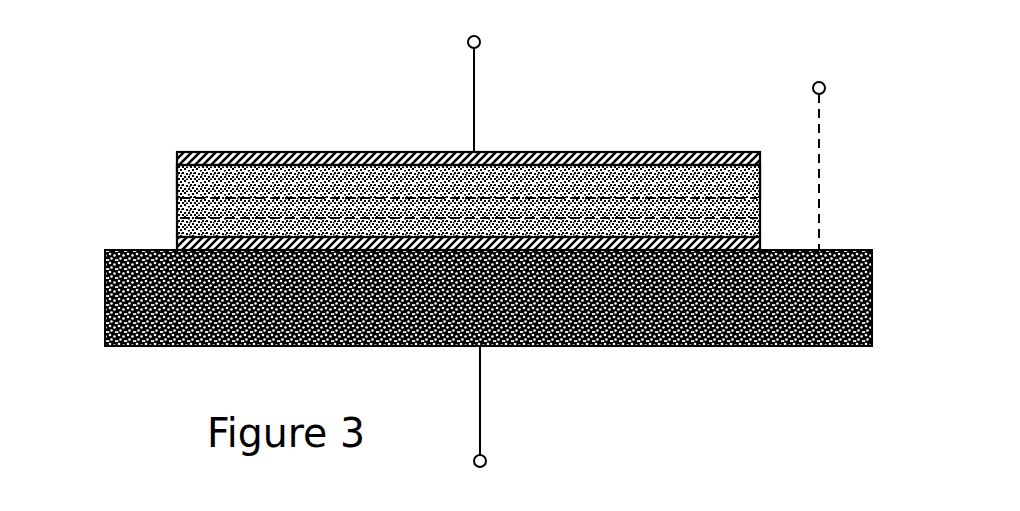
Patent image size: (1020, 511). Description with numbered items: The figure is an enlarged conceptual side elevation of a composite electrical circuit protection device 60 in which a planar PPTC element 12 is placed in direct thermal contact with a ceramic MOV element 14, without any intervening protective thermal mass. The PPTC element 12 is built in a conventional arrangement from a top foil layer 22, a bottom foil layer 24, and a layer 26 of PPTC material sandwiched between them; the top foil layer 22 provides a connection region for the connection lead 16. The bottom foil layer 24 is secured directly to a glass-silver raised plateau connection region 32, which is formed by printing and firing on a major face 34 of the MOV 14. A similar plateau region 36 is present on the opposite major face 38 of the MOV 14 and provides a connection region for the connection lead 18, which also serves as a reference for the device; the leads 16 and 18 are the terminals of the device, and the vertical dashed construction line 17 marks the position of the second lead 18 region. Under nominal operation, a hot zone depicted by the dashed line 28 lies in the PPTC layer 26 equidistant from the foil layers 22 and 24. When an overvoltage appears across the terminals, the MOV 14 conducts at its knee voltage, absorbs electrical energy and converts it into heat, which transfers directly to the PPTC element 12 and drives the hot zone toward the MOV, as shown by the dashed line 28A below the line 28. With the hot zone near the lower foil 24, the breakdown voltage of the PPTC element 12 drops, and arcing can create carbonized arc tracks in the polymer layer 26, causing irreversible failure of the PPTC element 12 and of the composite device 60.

The PPTC element 12 is at (455, 160).
The MOV element 14 is at (100, 352).
The connection lead 16 is at (474, 104).
The reference potential lead 17 is at (822, 142).
The connection lead 18 is at (481, 430).
The top foil layer 22 is at (330, 152).
The bottom foil layer 24 is at (177, 240).
The layer of PPTC material 26 is at (177, 188).
The dashed line 28 is at (760, 198).
The dashed line 28A is at (795, 228).
The raised plateau connection region 32 is at (173, 250).
The major face 34 is at (114, 250).
The plateau region 36 is at (768, 347).
The opposite major face 38 is at (125, 347).
The composite electrical circuit protection device 60 is at (613, 378).